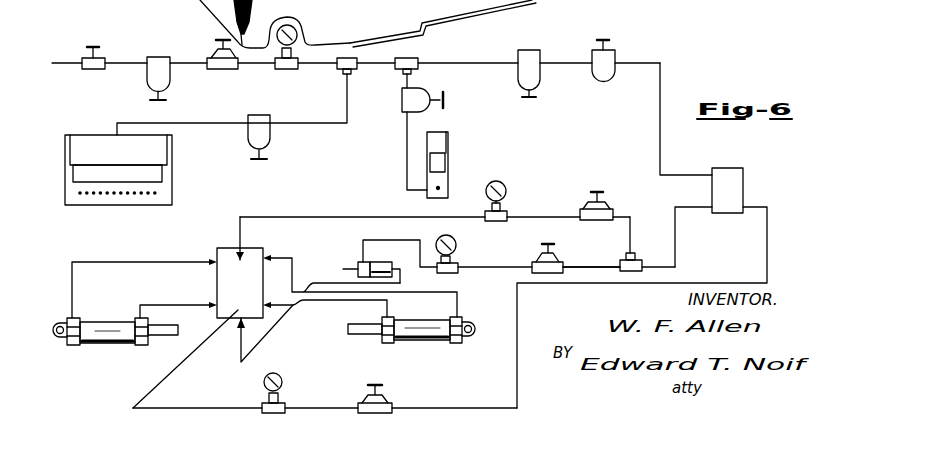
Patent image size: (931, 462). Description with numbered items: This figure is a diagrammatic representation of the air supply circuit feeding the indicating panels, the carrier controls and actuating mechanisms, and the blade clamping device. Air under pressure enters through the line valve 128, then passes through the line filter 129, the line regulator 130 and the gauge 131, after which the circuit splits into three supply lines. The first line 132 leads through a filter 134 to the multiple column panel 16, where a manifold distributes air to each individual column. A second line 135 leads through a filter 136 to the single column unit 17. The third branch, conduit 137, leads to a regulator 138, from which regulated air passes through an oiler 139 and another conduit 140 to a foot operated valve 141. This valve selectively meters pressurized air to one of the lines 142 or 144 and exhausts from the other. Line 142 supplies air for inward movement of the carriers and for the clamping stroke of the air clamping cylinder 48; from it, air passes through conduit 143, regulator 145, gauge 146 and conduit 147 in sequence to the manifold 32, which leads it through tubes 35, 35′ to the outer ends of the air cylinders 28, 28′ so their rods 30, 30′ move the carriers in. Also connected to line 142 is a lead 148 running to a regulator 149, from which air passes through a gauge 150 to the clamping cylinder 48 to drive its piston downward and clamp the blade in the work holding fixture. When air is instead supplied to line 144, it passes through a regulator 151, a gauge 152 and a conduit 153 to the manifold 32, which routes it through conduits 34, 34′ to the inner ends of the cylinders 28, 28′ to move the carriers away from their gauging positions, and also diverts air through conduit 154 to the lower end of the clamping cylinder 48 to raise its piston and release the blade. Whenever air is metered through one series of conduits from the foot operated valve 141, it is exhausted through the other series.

The multiple column panel 16 is at (118, 170).
The single column unit 17 is at (448, 145).
The air cylinder 28 is at (424, 343).
The air cylinder 28′ is at (112, 345).
The rod 30 is at (356, 334).
The rod 30′ is at (161, 336).
The manifold 32 is at (240, 267).
The tube 34 is at (314, 303).
The tube 34′ is at (173, 305).
The tube 35 is at (410, 292).
The tube 35′ is at (143, 262).
The air clamping cylinder 48 is at (375, 262).
The line valve 128 is at (94, 46).
The line filter 129 is at (157, 60).
The line regulator 130 is at (222, 66).
The gauge 131 is at (271, 63).
The first line 132 is at (347, 99).
The filter 134 is at (273, 141).
The line 135 is at (412, 83).
The filter 136 is at (446, 100).
The conduit 137 is at (459, 62).
The regulator 138 is at (527, 58).
The oiler 139 is at (603, 41).
The conduit 140 is at (659, 115).
The foot operated valve 141 is at (733, 187).
The line 142 is at (676, 233).
The conduit 143 is at (631, 233).
The line 144 is at (768, 240).
The regulator 145 is at (597, 192).
The gauge 146 is at (500, 176).
The conduit 147 is at (338, 217).
The lead 148 is at (591, 267).
The regulator 149 is at (548, 244).
The gauge 150 is at (457, 243).
The regulator 151 is at (390, 400).
The gauge 152 is at (283, 380).
The conduit 153 is at (169, 374).
The conduit 154 is at (264, 338).